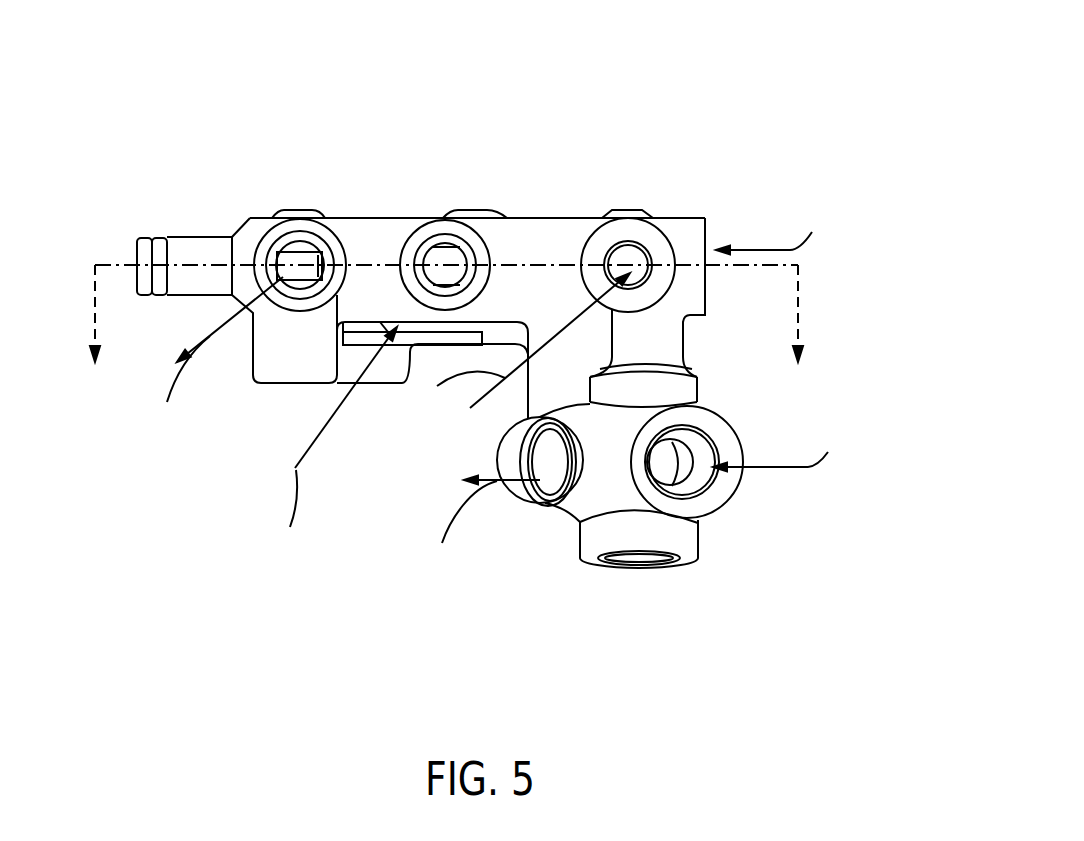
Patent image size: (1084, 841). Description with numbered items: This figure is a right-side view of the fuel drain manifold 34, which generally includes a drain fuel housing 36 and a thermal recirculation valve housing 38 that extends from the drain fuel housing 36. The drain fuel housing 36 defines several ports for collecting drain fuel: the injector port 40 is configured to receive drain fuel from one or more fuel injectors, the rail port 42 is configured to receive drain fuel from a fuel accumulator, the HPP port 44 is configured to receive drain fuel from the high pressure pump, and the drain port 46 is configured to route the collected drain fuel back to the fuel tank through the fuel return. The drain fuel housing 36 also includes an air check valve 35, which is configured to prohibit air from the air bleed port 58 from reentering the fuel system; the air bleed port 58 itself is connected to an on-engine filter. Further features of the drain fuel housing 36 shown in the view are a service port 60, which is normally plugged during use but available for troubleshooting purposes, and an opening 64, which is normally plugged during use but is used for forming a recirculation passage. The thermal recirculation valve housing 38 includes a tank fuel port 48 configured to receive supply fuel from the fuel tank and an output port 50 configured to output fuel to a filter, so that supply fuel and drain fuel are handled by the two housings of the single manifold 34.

The fuel drain manifold 34 is at (700, 90).
The air check valve 35 is at (290, 258).
The drain fuel housing 36 is at (534, 204).
The thermal recirculation valve housing 38 is at (628, 583).
The injector port 40 is at (705, 217).
The rail port 42 is at (648, 237).
The HPP port 44 is at (402, 322).
The drain port 46 is at (290, 225).
The tank fuel port 48 is at (727, 438).
The output port 50 is at (523, 518).
The air bleed port 58 is at (150, 243).
The service port 60 is at (434, 232).
The opening 64 is at (620, 210).